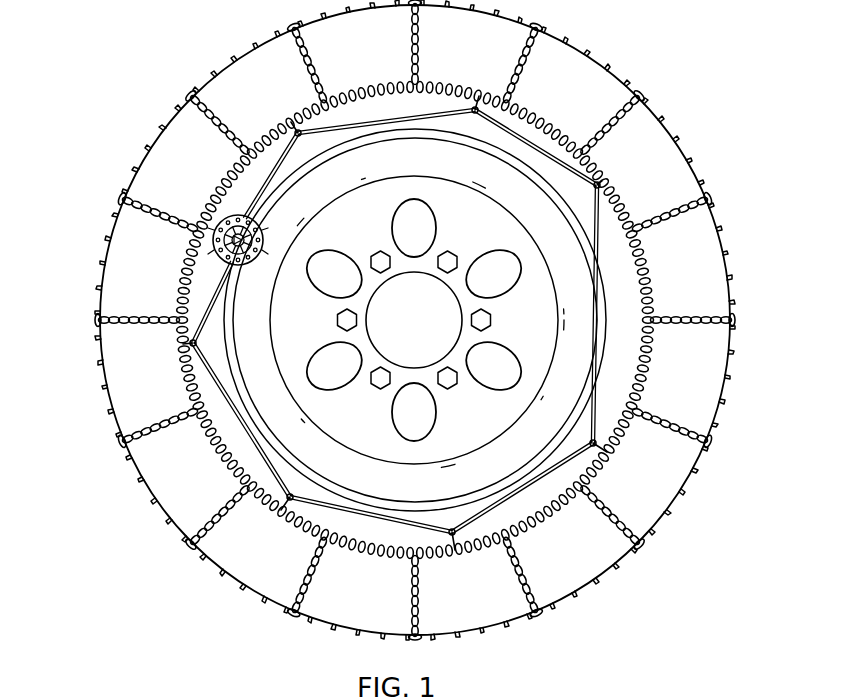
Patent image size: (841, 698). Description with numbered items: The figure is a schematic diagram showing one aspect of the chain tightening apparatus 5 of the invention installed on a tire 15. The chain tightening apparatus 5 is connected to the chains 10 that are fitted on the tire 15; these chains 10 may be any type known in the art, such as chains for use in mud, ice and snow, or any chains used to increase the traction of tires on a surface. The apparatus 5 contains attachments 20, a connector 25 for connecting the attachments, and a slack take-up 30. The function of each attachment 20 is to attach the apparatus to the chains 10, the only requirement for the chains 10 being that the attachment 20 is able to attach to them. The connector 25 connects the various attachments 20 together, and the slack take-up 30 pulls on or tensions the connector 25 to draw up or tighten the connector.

The chain tightening apparatus 5 is at (396, 349).
The chains 10 is at (180, 267).
The tire 15 is at (120, 292).
The attachment 20 is at (287, 130).
The connector 25 is at (242, 423).
The slack take-up 30 is at (220, 245).